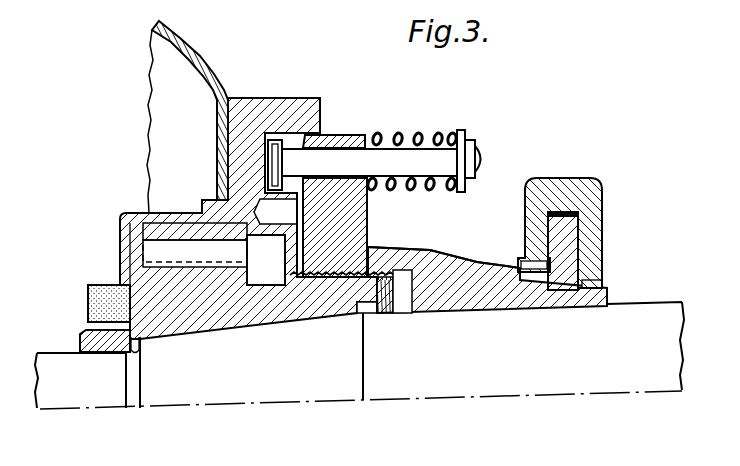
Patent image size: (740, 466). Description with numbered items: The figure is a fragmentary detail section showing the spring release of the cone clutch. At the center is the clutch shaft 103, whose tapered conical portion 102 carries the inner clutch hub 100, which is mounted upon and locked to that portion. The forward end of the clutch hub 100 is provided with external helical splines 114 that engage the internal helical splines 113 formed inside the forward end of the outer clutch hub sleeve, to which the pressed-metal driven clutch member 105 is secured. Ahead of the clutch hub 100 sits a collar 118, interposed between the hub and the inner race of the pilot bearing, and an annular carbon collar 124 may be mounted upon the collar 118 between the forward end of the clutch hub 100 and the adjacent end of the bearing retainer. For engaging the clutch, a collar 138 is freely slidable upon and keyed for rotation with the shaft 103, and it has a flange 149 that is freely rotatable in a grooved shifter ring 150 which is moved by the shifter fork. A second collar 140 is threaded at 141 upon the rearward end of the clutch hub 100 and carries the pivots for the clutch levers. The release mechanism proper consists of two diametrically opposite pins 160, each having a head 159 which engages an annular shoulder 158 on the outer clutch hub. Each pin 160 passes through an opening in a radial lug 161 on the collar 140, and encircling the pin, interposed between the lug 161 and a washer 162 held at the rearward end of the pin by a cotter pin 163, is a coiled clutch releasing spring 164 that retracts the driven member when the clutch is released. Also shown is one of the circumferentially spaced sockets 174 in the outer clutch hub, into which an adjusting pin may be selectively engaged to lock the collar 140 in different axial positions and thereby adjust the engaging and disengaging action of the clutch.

The clutch hub 100 is at (88, 314).
The conical portion 102 is at (233, 392).
The clutch shaft 103 is at (627, 318).
The driven clutch member 105 is at (190, 47).
The internal helical splines 113 is at (118, 261).
The external helical splines 114 is at (163, 243).
The collar 118 is at (80, 340).
The annular carbon collar 124 is at (88, 293).
The collar 138 is at (460, 312).
The second collar 140 is at (423, 250).
The threaded connection 141 is at (337, 278).
The flange 149 is at (567, 235).
The grooved shifter ring 150 is at (568, 187).
The annular shoulder 158 is at (288, 187).
The head 159 is at (272, 168).
The pin 160 is at (335, 160).
The radial lug 161 is at (360, 230).
The washer 162 is at (462, 133).
The cotter pin 163 is at (482, 157).
The clutch releasing spring 164 is at (382, 135).
The socket 174 is at (266, 260).